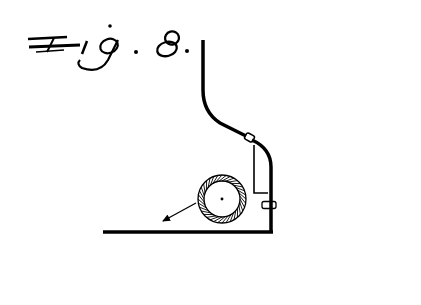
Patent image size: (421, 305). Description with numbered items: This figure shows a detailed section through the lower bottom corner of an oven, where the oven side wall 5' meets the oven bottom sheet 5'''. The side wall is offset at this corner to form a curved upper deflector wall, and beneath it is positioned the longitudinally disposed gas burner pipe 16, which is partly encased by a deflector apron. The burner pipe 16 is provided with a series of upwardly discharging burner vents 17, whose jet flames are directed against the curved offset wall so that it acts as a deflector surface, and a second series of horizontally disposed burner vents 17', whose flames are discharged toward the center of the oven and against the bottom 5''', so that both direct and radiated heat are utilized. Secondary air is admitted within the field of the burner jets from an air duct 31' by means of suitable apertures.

The oven side wall 5' is at (224, 88).
The oven bottom sheet 5''' is at (188, 249).
The air duct 31' is at (283, 186).
The upwardly discharging burner vents 17 is at (230, 153).
The horizontally disposed burner vents 17' is at (180, 205).
The branch burner pipe 16 is at (236, 210).